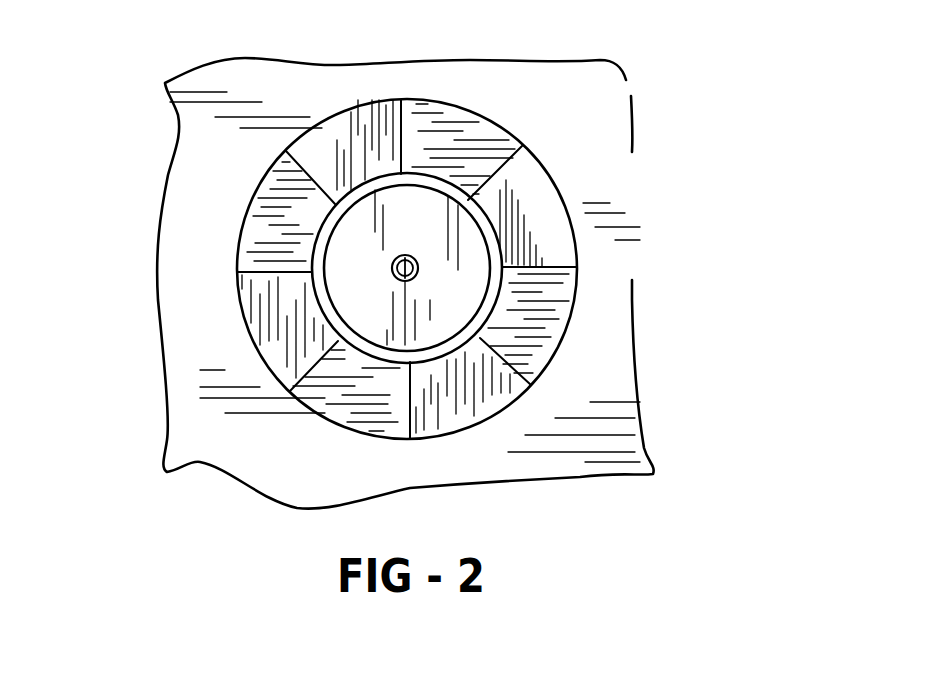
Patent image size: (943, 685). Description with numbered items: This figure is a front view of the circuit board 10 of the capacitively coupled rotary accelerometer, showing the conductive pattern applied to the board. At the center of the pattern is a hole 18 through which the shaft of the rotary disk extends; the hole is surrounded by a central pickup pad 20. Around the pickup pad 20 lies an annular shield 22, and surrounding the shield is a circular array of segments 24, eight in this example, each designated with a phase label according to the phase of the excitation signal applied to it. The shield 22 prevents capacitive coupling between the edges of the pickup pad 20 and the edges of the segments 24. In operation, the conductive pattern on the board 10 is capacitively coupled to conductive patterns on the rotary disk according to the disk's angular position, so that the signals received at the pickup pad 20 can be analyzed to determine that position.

The circuit board 10 is at (202, 162).
The hole 18 is at (404, 256).
The central pickup pad 20 is at (463, 284).
The annular shield 22 is at (483, 324).
The circular array of segments 24 is at (385, 116).